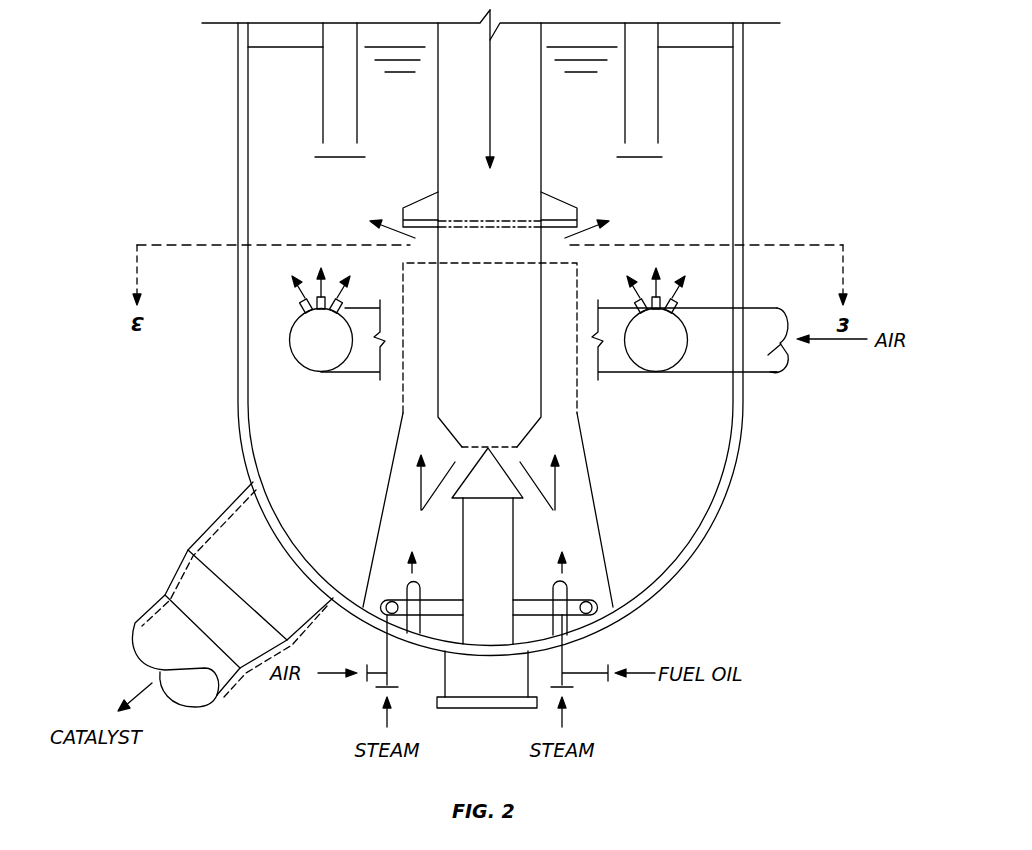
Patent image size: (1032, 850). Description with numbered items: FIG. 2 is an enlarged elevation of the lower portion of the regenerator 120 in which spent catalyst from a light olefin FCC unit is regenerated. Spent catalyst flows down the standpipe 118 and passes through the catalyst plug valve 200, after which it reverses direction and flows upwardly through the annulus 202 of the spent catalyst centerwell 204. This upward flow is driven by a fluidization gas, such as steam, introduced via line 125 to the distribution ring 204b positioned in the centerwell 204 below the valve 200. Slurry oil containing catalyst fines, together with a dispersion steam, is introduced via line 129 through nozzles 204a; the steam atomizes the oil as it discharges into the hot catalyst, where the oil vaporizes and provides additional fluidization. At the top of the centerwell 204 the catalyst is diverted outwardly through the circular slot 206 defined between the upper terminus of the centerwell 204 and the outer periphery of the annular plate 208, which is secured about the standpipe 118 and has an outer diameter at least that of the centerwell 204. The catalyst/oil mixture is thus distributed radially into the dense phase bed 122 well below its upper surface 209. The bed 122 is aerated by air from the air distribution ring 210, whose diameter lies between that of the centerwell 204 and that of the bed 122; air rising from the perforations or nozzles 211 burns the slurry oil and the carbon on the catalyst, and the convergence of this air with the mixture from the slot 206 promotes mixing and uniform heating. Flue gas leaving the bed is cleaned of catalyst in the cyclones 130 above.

The standpipe 118 is at (520, 35).
The regenerator 120 is at (745, 118).
The dense phase bed 122 is at (722, 222).
The line 125 is at (386, 662).
The line 129 is at (563, 662).
The cyclones 130 is at (332, 113).
The plug valve 200 is at (488, 483).
The annulus 202 is at (410, 378).
The spent catalyst centerwell 204 is at (580, 292).
The nozzles 204a is at (407, 580).
The distribution ring 204b is at (442, 598).
The circular slot 206 is at (422, 232).
The annular plate 208 is at (558, 232).
The upper surface 209 is at (261, 47).
The air distribution ring 210 is at (320, 346).
The perforations or nozzles 211 is at (677, 302).